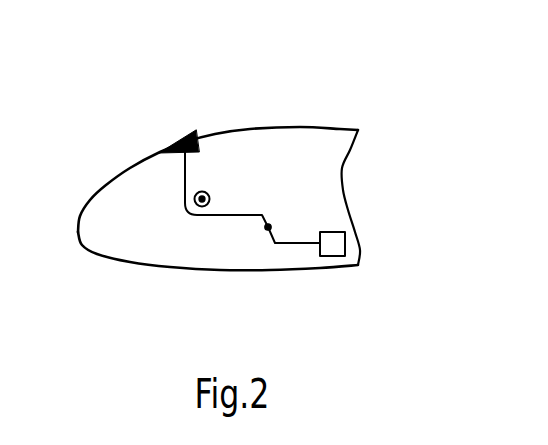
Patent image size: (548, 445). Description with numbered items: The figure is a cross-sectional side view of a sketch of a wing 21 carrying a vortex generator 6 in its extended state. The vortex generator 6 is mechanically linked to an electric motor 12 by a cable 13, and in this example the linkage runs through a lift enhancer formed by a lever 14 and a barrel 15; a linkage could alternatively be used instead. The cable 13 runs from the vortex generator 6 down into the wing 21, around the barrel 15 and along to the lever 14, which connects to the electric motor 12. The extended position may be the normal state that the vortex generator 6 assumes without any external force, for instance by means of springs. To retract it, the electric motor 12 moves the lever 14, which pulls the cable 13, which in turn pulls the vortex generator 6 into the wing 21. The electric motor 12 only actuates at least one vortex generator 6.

The wing 21 is at (300, 127).
The vortex generator 6 is at (177, 143).
The cable 13 is at (180, 182).
The barrel 15 is at (210, 192).
The lever 14 is at (270, 218).
The electric motor 12 is at (347, 231).